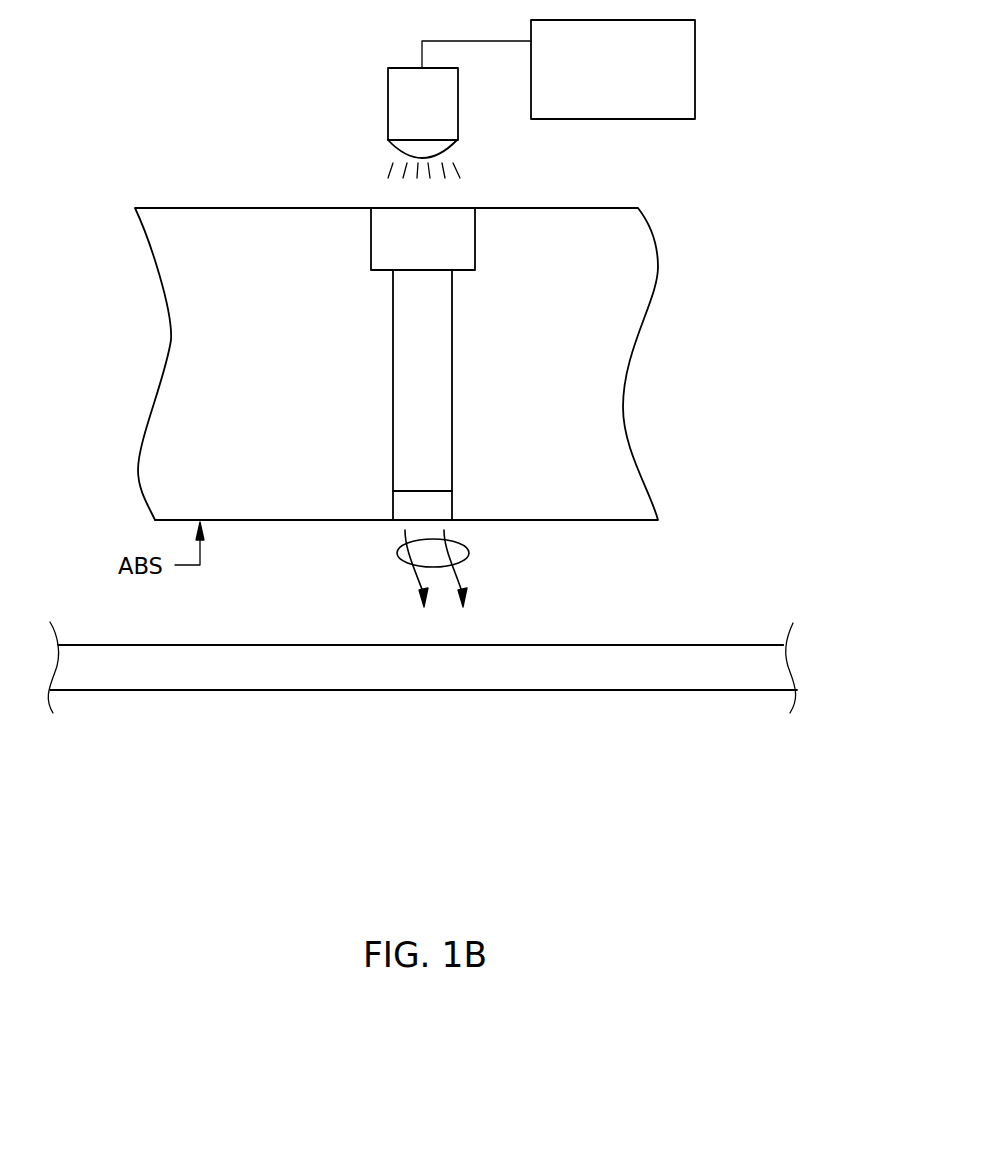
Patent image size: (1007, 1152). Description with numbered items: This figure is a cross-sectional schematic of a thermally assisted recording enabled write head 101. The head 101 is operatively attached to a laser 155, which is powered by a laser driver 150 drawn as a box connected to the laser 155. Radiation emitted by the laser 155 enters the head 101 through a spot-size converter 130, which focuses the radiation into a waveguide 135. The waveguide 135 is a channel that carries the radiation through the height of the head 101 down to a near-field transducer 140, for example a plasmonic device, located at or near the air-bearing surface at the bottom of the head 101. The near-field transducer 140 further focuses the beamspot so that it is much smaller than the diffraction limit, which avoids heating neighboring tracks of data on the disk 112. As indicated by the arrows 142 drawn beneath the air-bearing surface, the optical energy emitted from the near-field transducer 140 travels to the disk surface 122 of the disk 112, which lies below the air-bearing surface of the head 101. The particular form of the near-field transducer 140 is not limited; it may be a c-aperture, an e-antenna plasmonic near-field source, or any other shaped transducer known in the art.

The head 101 is at (202, 160).
The disk 112 is at (212, 690).
The disk surface 122 is at (658, 625).
The spot-size converter 130 is at (371, 232).
The waveguide 135 is at (393, 343).
The near-field transducer 140 is at (393, 505).
The arrows 142 is at (396, 553).
The laser driver 150 is at (695, 70).
The laser 155 is at (388, 98).